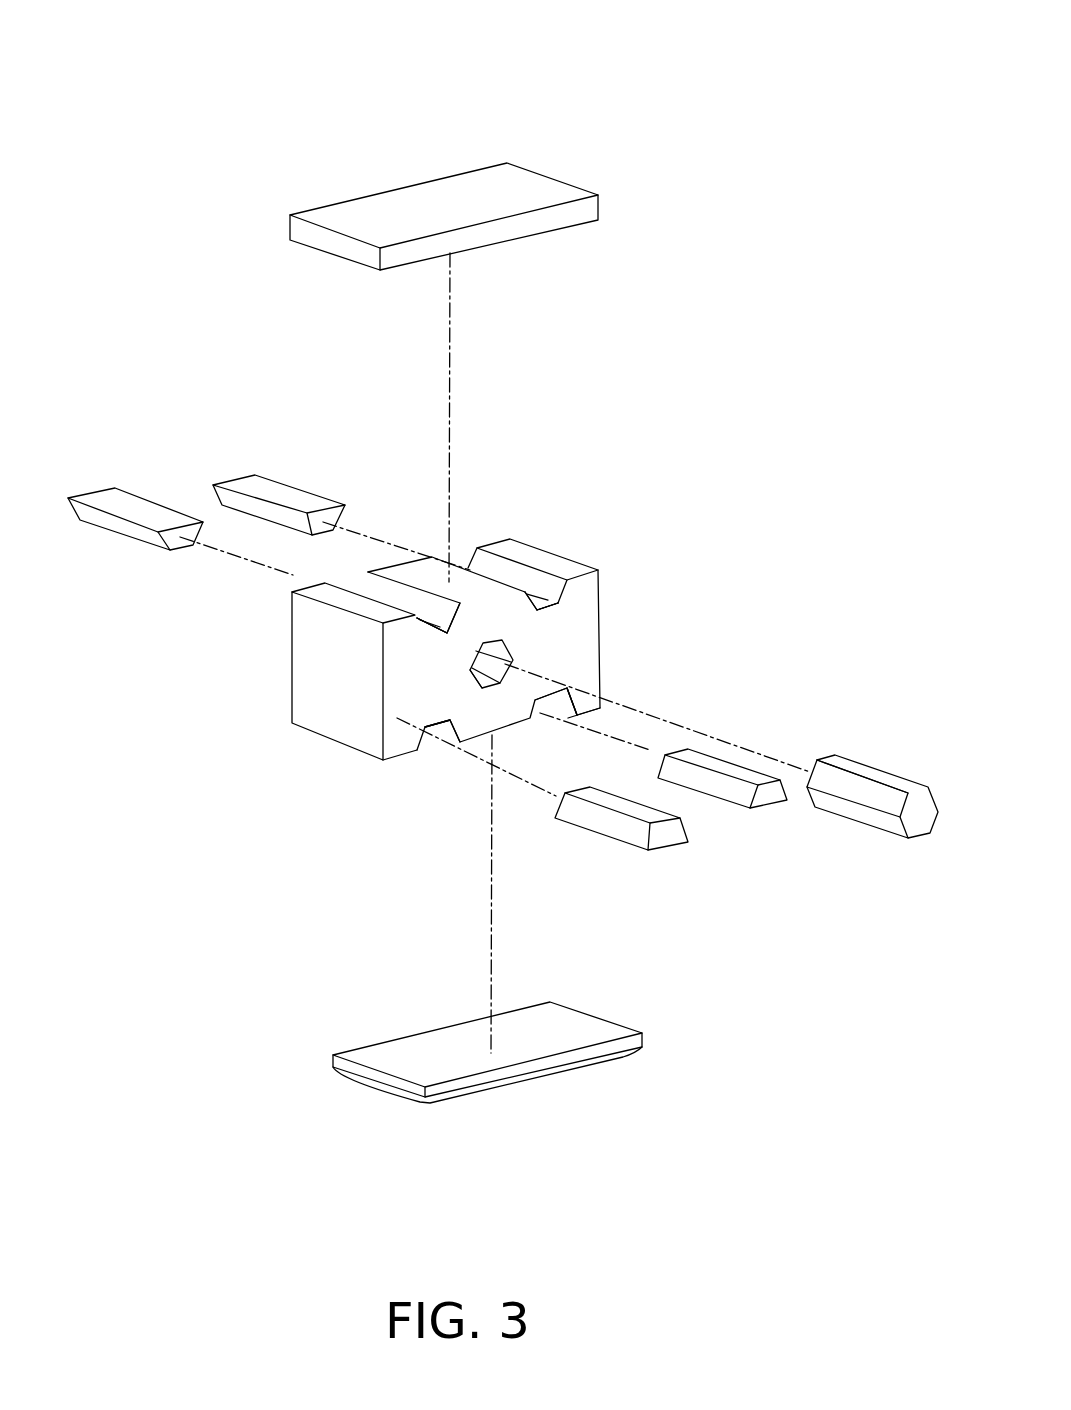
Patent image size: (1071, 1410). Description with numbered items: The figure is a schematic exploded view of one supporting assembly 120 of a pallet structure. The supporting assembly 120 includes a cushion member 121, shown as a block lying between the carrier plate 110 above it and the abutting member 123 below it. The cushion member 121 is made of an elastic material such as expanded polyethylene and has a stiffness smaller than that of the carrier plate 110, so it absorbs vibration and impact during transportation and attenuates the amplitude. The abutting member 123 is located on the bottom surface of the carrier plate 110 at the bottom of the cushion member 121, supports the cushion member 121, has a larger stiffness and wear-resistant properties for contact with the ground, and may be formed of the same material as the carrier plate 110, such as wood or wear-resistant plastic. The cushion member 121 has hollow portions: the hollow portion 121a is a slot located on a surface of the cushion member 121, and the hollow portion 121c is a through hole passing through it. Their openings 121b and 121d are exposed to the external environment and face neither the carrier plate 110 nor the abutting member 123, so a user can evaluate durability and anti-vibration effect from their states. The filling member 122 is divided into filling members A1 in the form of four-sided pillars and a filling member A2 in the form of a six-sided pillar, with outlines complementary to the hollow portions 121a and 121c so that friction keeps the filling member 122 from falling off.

The carrier plate 110 is at (553, 182).
The supporting assembly 120 is at (138, 30).
The cushion member 121 is at (658, 585).
The hollow portion 121a is at (514, 571).
The opening 121b is at (419, 646).
The hollow portion 121c is at (500, 680).
The opening 121d is at (479, 692).
The filling member 122 is at (503, 661).
The abutting member 123 is at (525, 1086).
The filling member A1 is at (120, 489).
The filling member A2 is at (920, 815).